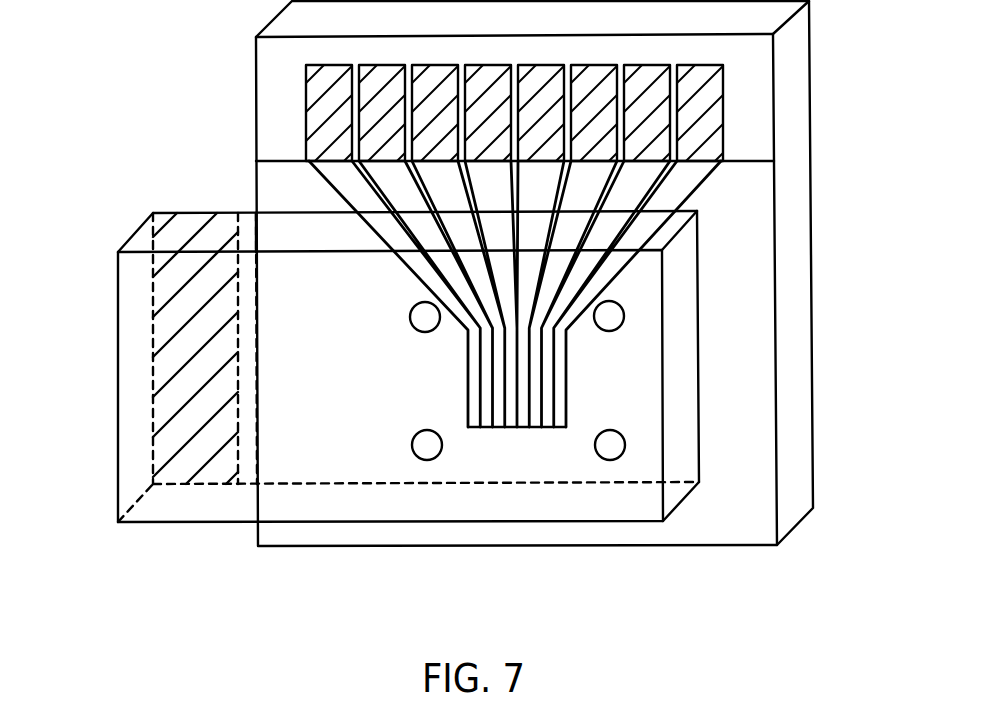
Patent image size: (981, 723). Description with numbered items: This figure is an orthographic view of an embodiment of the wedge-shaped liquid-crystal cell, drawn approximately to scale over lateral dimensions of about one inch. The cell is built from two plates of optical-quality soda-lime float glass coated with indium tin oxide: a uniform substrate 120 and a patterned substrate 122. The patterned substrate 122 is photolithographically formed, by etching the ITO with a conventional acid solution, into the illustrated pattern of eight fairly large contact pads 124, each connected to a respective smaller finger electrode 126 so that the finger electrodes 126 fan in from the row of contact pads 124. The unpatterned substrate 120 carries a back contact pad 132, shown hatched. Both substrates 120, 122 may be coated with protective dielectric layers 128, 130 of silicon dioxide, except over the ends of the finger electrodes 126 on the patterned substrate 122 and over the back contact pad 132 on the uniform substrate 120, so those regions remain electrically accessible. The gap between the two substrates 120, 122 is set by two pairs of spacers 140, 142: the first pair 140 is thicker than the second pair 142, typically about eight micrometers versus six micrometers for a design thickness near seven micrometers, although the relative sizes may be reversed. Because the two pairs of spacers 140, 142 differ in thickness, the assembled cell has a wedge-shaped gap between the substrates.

The uniform substrate 120 is at (687, 468).
The patterned substrate 122 is at (792, 429).
The contact pads 124 is at (713, 102).
The finger electrodes 126 is at (560, 378).
The protective dielectric layer 128 is at (740, 193).
The protective dielectric layer 130 is at (243, 323).
The back contact pad 132 is at (185, 222).
The first pair of spacers 140 is at (410, 317).
The second pair of spacers 142 is at (412, 445).